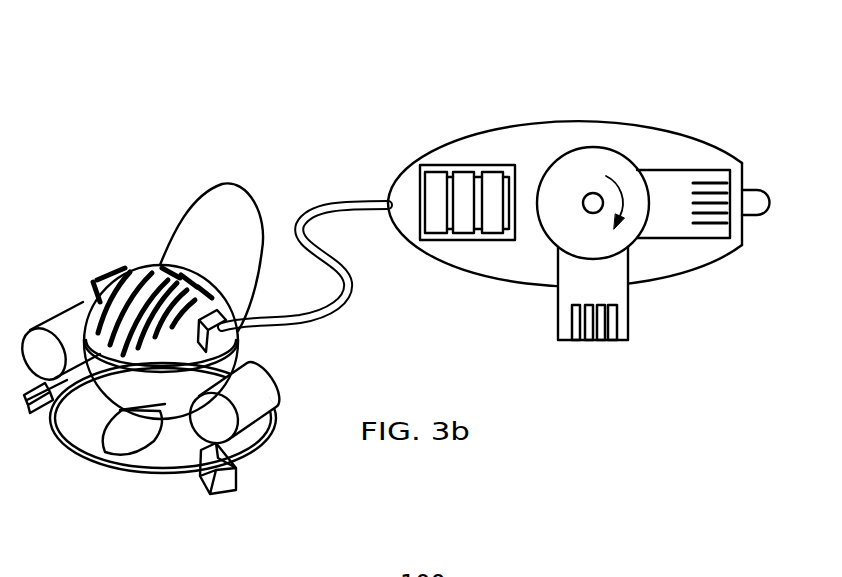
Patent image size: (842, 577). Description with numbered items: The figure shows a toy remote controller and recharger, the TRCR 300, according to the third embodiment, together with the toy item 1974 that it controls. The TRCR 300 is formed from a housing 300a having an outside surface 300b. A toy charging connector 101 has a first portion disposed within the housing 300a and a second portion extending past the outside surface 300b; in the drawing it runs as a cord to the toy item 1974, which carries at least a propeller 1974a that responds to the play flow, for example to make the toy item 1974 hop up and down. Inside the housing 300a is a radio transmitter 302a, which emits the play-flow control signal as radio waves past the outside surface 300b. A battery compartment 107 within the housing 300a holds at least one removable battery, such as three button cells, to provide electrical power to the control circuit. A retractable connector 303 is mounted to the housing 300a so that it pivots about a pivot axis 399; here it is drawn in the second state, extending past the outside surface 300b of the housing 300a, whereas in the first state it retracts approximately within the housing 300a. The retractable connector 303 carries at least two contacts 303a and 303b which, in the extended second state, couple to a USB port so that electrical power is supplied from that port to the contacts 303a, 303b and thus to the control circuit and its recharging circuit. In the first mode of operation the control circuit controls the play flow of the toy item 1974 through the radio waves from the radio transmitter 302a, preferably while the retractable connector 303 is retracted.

The toy item 1974 is at (147, 267).
The propeller 1974a is at (130, 423).
The toy charging connector 101 is at (317, 210).
The TRCR 300 is at (573, 220).
The housing 300a is at (710, 265).
The outside surface 300b is at (583, 118).
The radio transmitter 302a is at (763, 198).
The pivot axis 399 is at (594, 193).
The battery compartment 107 is at (432, 227).
The retractable connector 303 is at (593, 339).
The contact 303a is at (573, 337).
The contact 303b is at (608, 340).